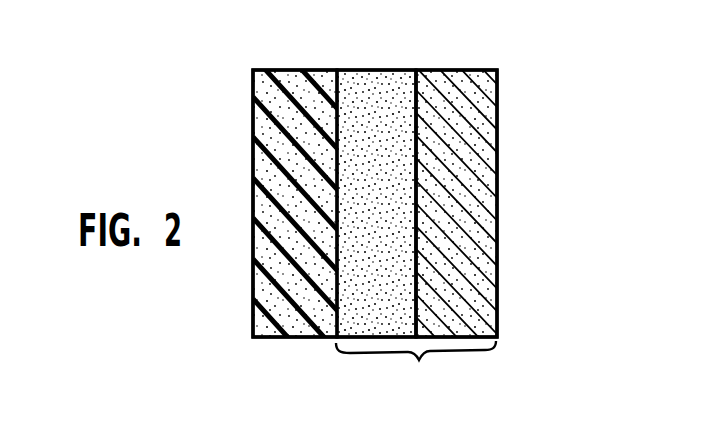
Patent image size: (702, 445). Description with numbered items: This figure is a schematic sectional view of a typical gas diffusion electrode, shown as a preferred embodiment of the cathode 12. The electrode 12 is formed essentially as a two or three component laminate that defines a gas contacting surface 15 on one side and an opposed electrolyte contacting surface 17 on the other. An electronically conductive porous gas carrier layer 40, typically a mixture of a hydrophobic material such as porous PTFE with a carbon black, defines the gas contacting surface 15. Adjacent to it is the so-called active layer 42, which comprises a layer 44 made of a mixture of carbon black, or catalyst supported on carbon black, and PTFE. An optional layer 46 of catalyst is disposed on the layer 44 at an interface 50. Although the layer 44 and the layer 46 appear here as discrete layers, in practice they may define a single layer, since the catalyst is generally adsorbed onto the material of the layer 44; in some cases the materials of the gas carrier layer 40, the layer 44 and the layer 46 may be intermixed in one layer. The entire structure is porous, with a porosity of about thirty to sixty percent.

The cathode 12 is at (457, 56).
The gas contacting surface 15 is at (253, 131).
The electrolyte contacting surface 17 is at (498, 142).
The gas carrier layer 40 is at (255, 273).
The active layer 42 is at (416, 368).
The layer 44 is at (372, 86).
The layer of catalyst 46 is at (470, 262).
The interface 50 is at (421, 87).